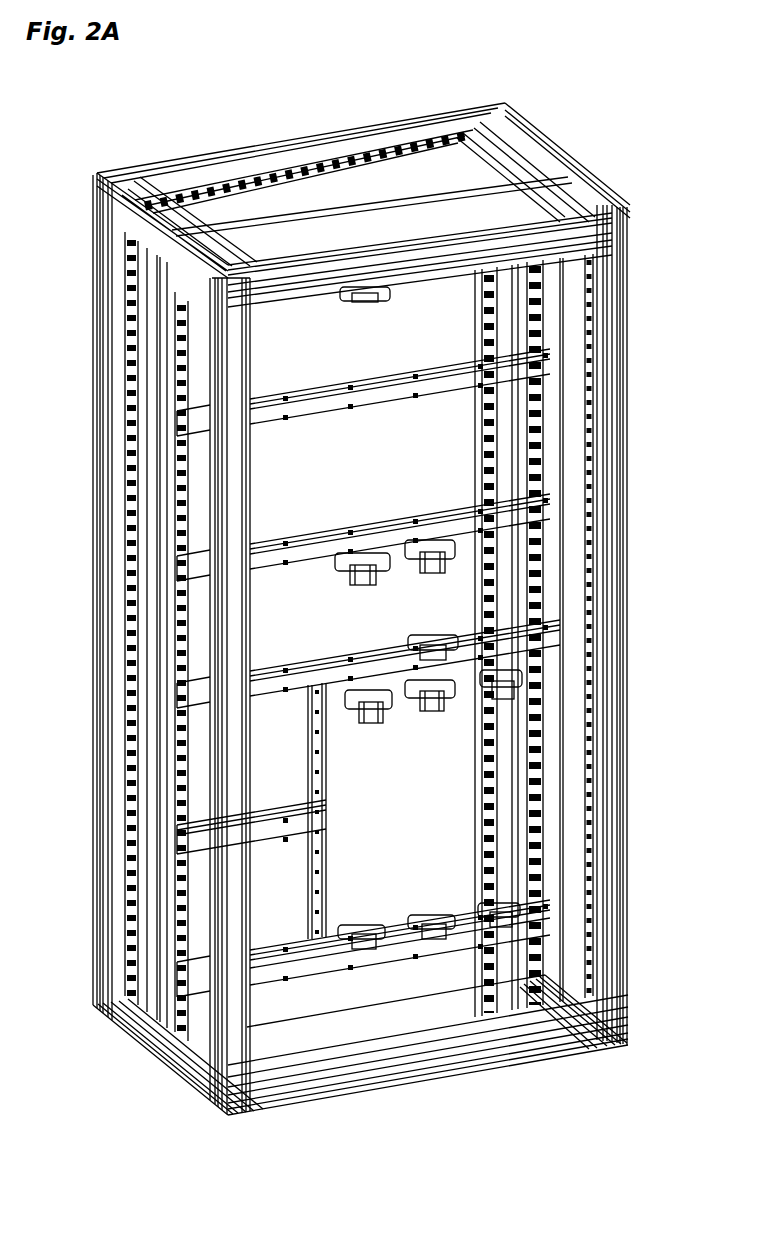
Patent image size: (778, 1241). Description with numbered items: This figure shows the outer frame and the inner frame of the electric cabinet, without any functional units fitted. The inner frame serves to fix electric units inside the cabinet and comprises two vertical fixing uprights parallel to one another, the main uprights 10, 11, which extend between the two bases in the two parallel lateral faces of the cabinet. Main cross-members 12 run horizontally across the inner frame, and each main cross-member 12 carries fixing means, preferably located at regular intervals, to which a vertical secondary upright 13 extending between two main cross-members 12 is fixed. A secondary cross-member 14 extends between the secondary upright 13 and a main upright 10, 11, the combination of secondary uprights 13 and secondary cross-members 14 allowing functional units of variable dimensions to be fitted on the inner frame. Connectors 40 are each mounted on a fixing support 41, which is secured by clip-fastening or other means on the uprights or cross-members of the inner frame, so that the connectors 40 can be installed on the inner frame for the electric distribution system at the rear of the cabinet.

The main upright 10 is at (172, 730).
The main upright 11 is at (548, 623).
The main cross-member 12 is at (328, 398).
The secondary upright 13 is at (327, 853).
The secondary cross-member 14 is at (268, 826).
The connector 40 is at (378, 584).
The fixing support 41 is at (342, 572).